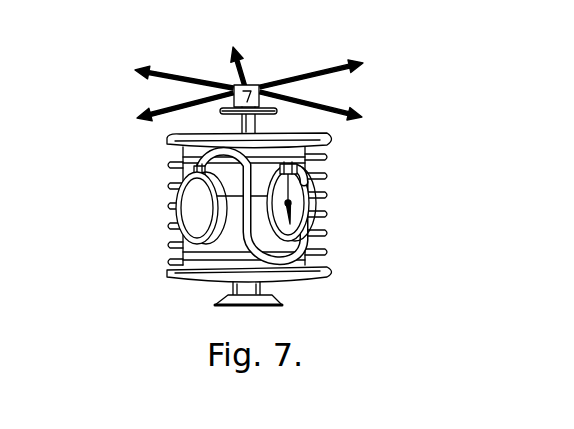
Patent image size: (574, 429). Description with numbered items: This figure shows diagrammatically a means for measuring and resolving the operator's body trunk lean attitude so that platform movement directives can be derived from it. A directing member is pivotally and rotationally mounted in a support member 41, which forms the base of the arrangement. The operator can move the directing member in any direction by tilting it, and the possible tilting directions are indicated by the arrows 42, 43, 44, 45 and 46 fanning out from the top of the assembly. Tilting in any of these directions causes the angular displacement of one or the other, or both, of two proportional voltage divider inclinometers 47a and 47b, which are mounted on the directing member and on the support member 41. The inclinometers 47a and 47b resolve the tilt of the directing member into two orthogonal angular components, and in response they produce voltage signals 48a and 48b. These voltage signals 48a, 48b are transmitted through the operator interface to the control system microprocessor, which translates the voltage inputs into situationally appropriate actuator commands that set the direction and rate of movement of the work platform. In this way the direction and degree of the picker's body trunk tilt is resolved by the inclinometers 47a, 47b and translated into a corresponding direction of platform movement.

The support member 41 is at (225, 298).
The arrow 42 is at (330, 67).
The arrow 43 is at (340, 105).
The arrow 44 is at (168, 105).
The arrow 45 is at (160, 69).
The arrow 46 is at (243, 60).
The proportional voltage divider inclinometer 47a is at (290, 207).
The proportional voltage divider inclinometer 47b is at (198, 210).
The voltage signal 48a is at (328, 162).
The voltage signal 48b is at (197, 163).